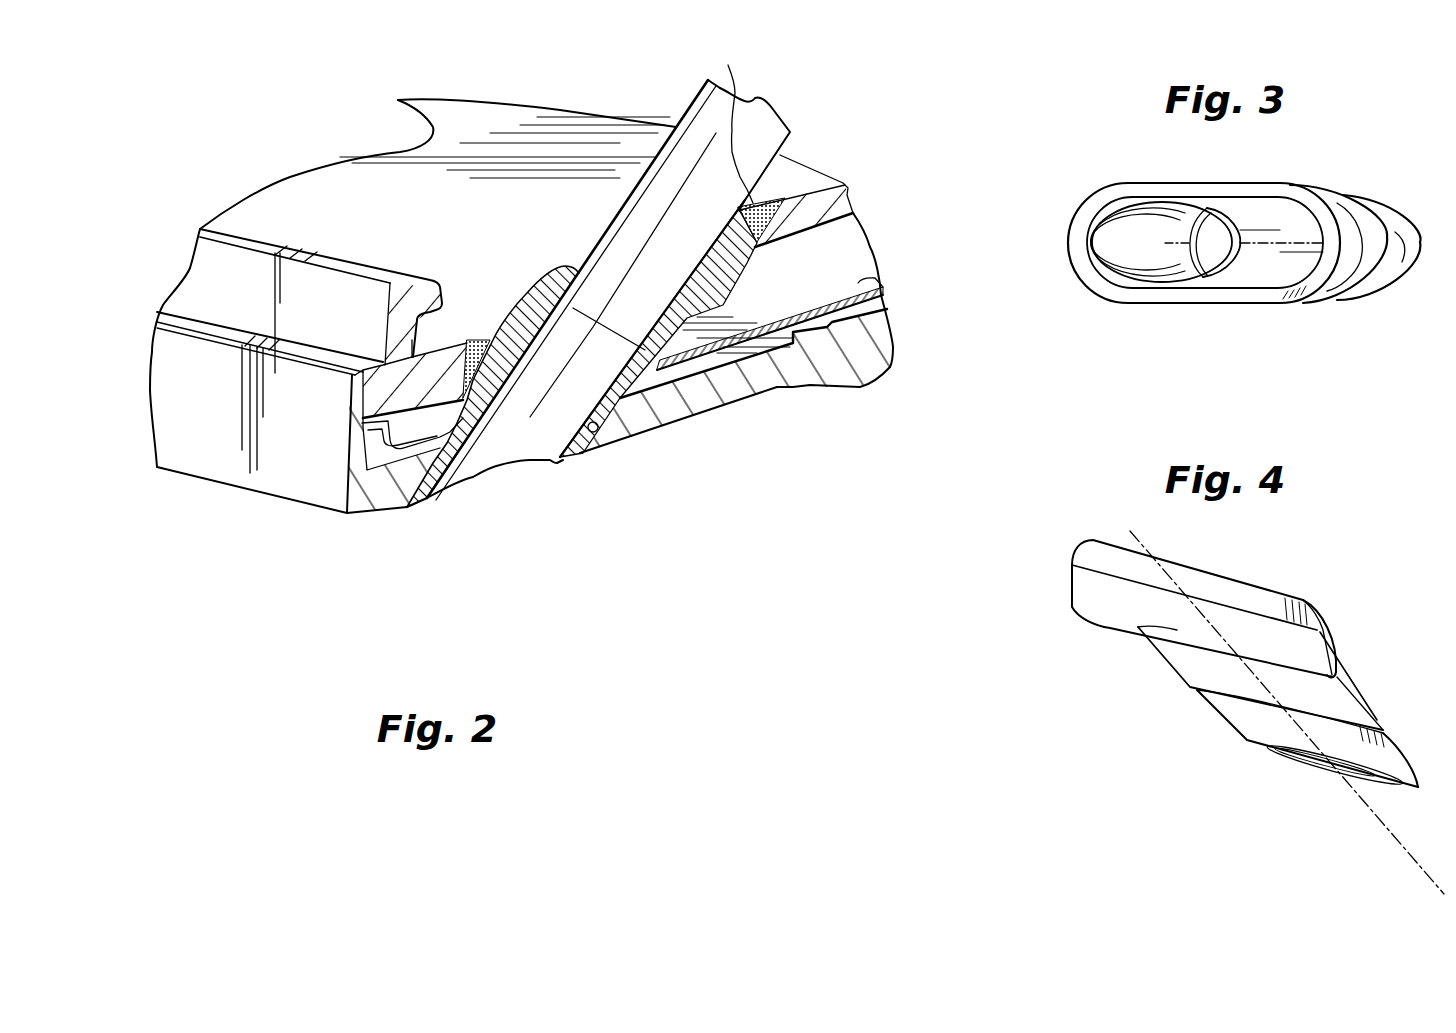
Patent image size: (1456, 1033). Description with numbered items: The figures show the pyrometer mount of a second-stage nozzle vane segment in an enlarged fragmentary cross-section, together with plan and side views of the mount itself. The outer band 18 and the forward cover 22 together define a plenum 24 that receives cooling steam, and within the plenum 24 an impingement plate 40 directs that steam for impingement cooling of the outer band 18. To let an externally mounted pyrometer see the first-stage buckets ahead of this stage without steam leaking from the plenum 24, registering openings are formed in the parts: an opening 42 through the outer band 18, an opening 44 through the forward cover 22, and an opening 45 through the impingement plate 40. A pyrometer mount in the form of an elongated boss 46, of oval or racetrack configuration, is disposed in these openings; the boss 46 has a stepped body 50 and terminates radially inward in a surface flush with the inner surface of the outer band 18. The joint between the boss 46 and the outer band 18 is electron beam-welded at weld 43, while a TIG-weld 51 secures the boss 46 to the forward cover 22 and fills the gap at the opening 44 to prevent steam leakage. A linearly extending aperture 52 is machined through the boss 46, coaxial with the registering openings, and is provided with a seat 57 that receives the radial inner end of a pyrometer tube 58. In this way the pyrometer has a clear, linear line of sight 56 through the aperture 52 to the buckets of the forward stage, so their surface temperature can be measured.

In FIG. 2, the outer band 18 is at (773, 385).
In FIG. 2, the forward cover 22 is at (827, 197).
In FIG. 2, the plenum 24 is at (840, 243).
In FIG. 2, the impingement plate 40 is at (860, 293).
In FIG. 2, the opening 42 is at (597, 432).
In FIG. 2, the electron beam weld 43 is at (617, 408).
In FIG. 2, the opening 44 is at (753, 207).
In FIG. 2, the opening 45 is at (457, 467).
In FIG. 2, the boss 46 is at (537, 307).
In FIG. 3, the boss 46 is at (1205, 303).
In FIG. 4, the boss 46 is at (1090, 586).
In FIG. 4, the stepped body 50 is at (1207, 705).
In FIG. 2, the TIG-weld 51 is at (733, 121).
In FIG. 3, the aperture 52 is at (1135, 247).
In FIG. 4, the line of sight 56 is at (1387, 829).
In FIG. 2, the seat 57 is at (643, 347).
In FIG. 2, the pyrometer tube 58 is at (712, 122).